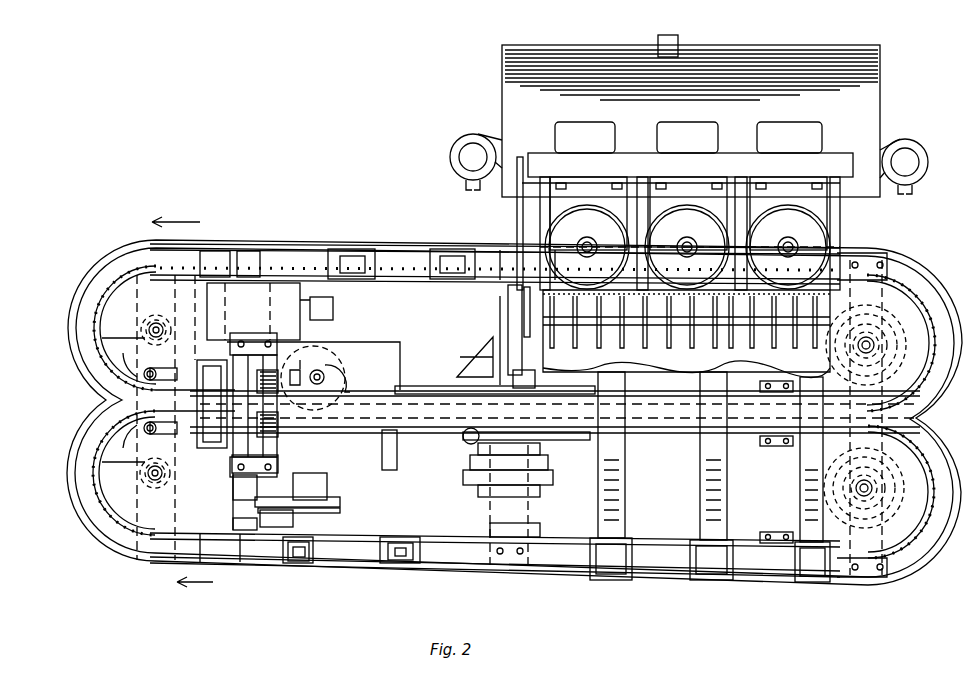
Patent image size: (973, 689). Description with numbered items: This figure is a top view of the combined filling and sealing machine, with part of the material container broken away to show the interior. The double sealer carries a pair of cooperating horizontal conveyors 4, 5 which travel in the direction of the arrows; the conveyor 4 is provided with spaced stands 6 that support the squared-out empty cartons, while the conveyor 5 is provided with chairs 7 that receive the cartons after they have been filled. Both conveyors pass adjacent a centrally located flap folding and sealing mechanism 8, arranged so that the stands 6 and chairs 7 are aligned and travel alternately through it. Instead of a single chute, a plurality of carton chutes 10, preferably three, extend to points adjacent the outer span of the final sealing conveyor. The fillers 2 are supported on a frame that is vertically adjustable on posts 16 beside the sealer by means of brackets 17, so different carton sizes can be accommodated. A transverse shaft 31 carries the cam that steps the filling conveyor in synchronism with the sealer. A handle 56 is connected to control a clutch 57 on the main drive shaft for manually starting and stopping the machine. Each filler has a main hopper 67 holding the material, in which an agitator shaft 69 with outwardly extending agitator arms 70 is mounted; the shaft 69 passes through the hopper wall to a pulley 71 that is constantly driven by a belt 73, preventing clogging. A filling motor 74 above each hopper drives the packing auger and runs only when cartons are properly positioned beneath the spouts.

The filler 2 is at (670, 203).
The conveyor 4 is at (97, 515).
The conveyor 5 is at (77, 333).
The stand 6 is at (297, 563).
The chair 7 is at (340, 253).
The flap folding and sealing mechanism 8 is at (100, 402).
The carton chute 10 is at (707, 503).
The post 16 is at (470, 137).
The bracket 17 is at (452, 150).
The transverse shaft 31 is at (530, 511).
The handle 56 is at (570, 441).
The clutch 57 is at (553, 485).
The main hopper 67 is at (676, 361).
The agitator shaft 69 is at (686, 331).
The agitator arm 70 is at (622, 335).
The pulley 71 is at (508, 318).
The belt 73 is at (517, 218).
The filling motor 74 is at (690, 247).